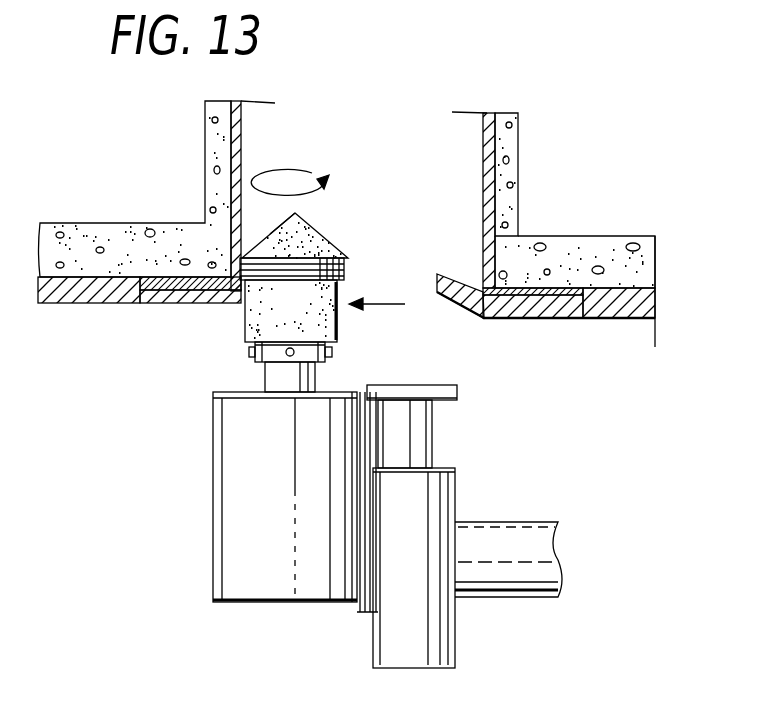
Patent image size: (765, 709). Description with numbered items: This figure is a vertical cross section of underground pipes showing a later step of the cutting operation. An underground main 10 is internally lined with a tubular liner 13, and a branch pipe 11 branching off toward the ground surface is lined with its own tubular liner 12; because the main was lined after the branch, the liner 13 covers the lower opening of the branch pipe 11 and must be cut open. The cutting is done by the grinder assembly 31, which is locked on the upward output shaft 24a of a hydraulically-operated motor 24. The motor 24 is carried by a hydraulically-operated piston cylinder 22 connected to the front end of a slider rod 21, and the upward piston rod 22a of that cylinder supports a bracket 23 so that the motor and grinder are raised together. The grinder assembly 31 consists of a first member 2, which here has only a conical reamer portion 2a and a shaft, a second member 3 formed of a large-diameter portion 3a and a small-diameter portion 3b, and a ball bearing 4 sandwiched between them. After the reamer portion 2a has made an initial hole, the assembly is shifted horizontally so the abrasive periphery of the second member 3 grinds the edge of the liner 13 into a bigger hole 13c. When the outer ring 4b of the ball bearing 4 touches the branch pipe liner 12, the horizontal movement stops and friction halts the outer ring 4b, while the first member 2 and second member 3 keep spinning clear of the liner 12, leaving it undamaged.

The first member 2 is at (321, 245).
The conical reamer portion 2a is at (266, 246).
The second member 3 is at (330, 323).
The large-diameter portion 3a is at (336, 326).
The small-diameter portion 3b is at (332, 353).
The ball bearing 4 is at (344, 268).
The outer ring 4b is at (344, 278).
The underground main 10 is at (596, 237).
The branch pipe 11 is at (521, 158).
The tubular liner 12 is at (241, 152).
The tubular liner 13 is at (574, 318).
The bigger hole 13c is at (434, 277).
The slider rod 21 is at (526, 521).
The hydraulically-operated piston cylinder 22 is at (440, 637).
The piston rod 22a is at (418, 441).
The bracket 23 is at (445, 386).
The hydraulically-operated motor 24 is at (268, 600).
The output shaft 24a is at (266, 382).
The grinder assembly 31 is at (318, 226).